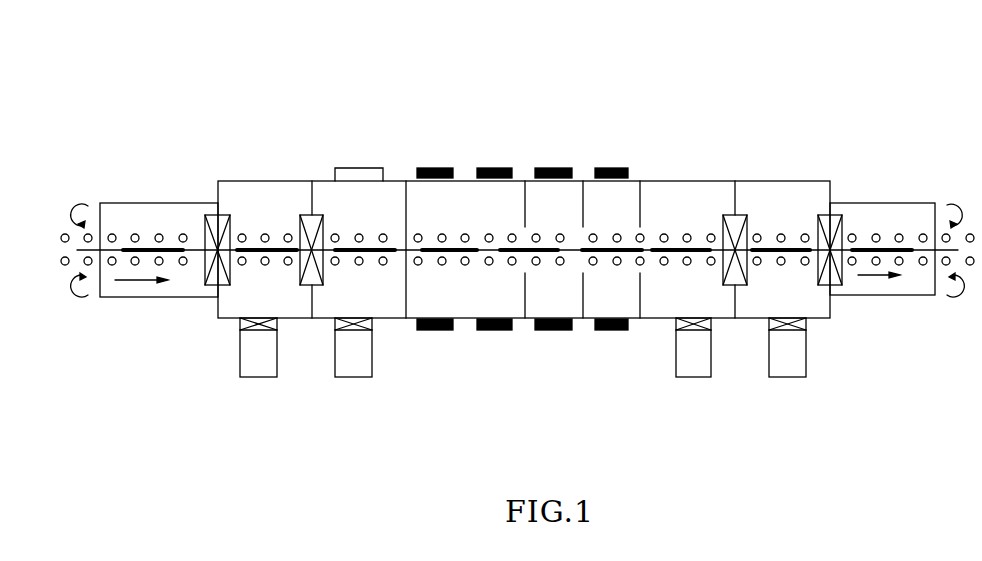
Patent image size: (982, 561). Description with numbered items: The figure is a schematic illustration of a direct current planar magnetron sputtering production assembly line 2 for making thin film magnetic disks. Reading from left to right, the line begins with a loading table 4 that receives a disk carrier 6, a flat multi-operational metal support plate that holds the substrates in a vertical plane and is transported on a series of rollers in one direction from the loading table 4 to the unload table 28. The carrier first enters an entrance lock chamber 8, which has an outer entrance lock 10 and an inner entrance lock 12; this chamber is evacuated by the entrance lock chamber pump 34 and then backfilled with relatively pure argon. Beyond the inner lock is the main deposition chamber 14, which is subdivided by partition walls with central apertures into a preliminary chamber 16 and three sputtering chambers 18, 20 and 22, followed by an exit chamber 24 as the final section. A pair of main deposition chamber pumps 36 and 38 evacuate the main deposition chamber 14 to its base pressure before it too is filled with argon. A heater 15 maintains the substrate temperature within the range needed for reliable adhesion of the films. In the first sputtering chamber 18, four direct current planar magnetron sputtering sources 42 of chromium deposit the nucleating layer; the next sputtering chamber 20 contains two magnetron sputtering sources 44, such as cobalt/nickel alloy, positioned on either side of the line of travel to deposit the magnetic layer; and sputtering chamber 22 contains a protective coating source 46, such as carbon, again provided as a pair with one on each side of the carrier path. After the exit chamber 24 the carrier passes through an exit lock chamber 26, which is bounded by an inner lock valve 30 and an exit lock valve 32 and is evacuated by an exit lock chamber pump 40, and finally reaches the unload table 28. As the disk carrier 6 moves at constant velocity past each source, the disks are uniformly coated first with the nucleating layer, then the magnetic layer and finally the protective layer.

The direct current planar magnetron sputtering production assembly line 2 is at (502, 76).
The loading table 4 is at (132, 200).
The disk carrier 6 is at (165, 223).
The entrance lock chamber 8 is at (246, 192).
The outer entrance lock 10 is at (209, 282).
The inner entrance lock 12 is at (304, 205).
The main deposition chamber 14 is at (526, 340).
The heater 15 is at (353, 159).
The preliminary chamber 16 is at (328, 192).
The first sputtering chamber 18 is at (462, 198).
The sputtering chamber 20 is at (565, 196).
The sputtering chamber 22 is at (634, 197).
The exit chamber 24 is at (699, 197).
The exit lock chamber 26 is at (807, 197).
The unload table 28 is at (904, 207).
The inner lock valve 30 is at (742, 206).
The exit lock valve 32 is at (837, 206).
The entrance lock chamber pump 34 is at (252, 366).
The main deposition chamber pump 36 is at (349, 365).
The main deposition chamber pump 38 is at (682, 354).
The exit lock chamber pump 40 is at (794, 361).
The direct current planar magnetron sputtering sources 42 is at (426, 156).
The magnetron sputtering sources 44 is at (549, 155).
The protective coating source 46 is at (622, 156).